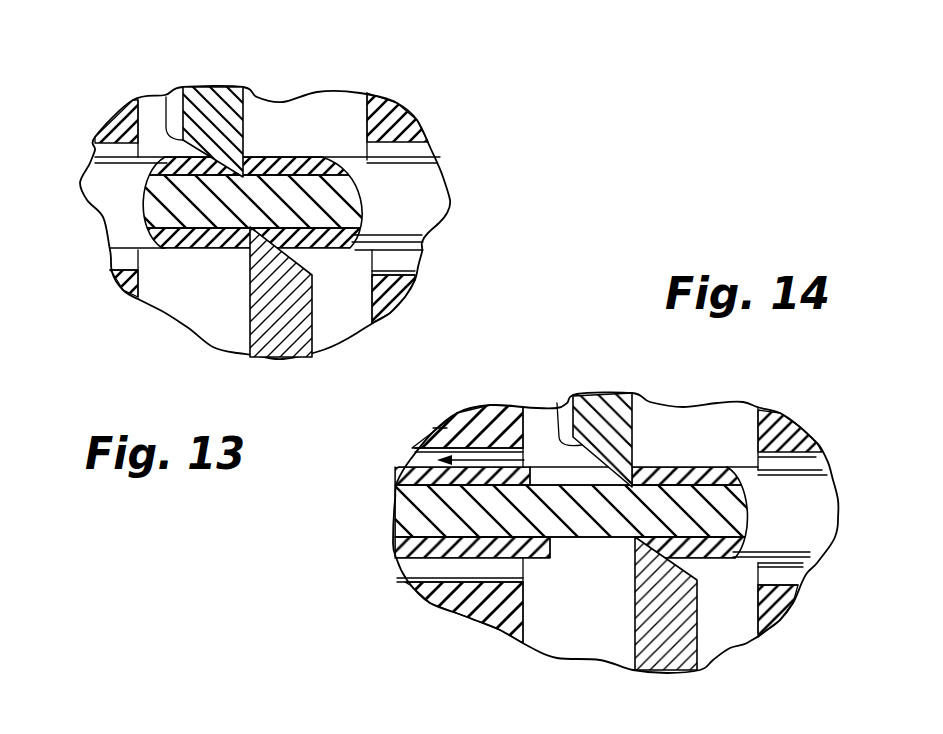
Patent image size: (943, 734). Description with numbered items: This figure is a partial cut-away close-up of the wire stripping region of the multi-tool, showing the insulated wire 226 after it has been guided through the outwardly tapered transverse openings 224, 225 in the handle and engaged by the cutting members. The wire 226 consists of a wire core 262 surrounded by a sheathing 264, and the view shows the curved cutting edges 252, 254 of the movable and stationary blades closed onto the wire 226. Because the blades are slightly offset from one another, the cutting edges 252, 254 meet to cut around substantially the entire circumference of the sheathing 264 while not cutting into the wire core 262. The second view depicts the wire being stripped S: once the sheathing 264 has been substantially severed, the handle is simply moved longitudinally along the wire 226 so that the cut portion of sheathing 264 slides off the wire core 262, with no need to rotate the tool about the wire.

In FIG. 13, the transverse opening 224 is at (100, 150).
In FIG. 14, the transverse opening 224 is at (818, 468).
In FIG. 13, the transverse opening 225 is at (420, 152).
In FIG. 13, the wire 226 is at (430, 210).
In FIG. 14, the wire 226 is at (827, 512).
In FIG. 13, the curved cutting edge 252 is at (166, 97).
In FIG. 14, the curved cutting edge 252 is at (557, 403).
In FIG. 13, the curved cutting edge 254 is at (308, 266).
In FIG. 14, the curved cutting edge 254 is at (683, 575).
In FIG. 13, the wire core 262 is at (163, 250).
In FIG. 14, the wire core 262 is at (397, 507).
In FIG. 13, the wire sheathing 264 is at (203, 250).
In FIG. 14, the wire sheathing 264 is at (667, 477).
In FIG. 14, the stripping S is at (490, 452).